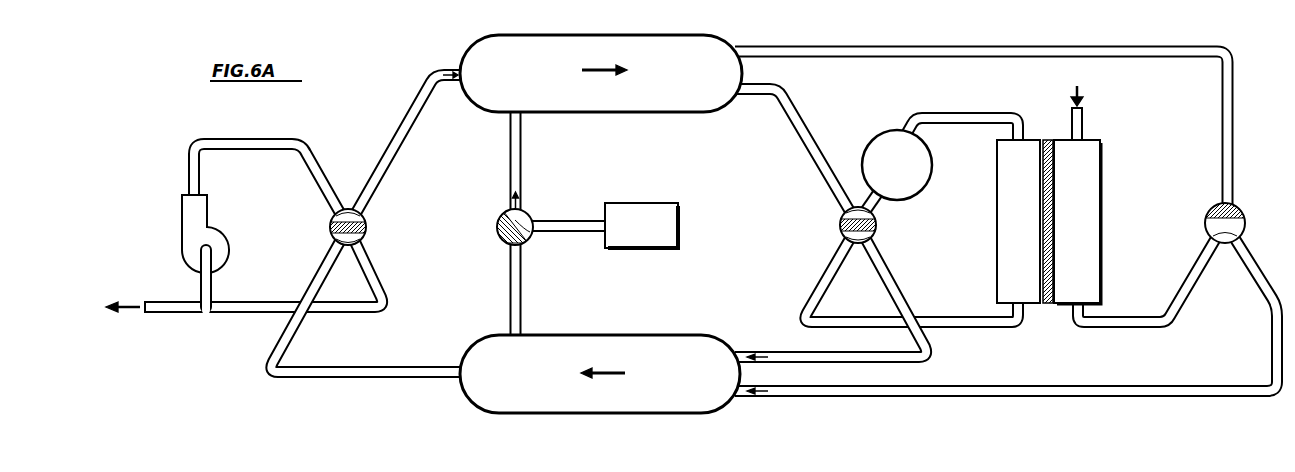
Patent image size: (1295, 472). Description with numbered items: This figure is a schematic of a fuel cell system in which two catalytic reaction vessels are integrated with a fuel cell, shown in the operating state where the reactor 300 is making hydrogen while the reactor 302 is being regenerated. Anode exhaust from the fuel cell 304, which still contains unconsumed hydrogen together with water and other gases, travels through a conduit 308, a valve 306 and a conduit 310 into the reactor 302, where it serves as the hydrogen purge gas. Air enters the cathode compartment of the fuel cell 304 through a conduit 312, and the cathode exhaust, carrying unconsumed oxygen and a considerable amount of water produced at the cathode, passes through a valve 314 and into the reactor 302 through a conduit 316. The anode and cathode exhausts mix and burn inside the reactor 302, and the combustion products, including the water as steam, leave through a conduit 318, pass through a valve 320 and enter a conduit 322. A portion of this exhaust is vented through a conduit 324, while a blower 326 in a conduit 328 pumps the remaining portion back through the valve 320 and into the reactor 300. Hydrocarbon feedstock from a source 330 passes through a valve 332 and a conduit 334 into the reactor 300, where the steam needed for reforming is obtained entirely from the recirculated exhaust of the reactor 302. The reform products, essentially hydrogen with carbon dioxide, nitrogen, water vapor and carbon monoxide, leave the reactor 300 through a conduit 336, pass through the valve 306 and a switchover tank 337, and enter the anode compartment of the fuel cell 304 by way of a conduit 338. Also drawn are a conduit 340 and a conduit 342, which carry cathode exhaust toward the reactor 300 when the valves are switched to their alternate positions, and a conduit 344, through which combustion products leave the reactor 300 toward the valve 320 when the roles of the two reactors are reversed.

The reactor 300 is at (560, 82).
The reactor 302 is at (556, 384).
The fuel cell 304 is at (1103, 209).
The valve 306 is at (880, 227).
The conduit 308 is at (823, 280).
The conduit 310 is at (902, 291).
The conduit 312 is at (1084, 126).
The valve 314 is at (1246, 216).
The conduit 316 is at (915, 393).
The conduit 318 is at (370, 381).
The valve 320 is at (368, 228).
The conduit 322 is at (246, 306).
The conduit 324 is at (177, 303).
The blower 326 is at (213, 234).
The conduit 328 is at (237, 142).
The source 330 is at (636, 203).
The valve 332 is at (497, 230).
The conduit 334 is at (521, 151).
The conduit 336 is at (797, 115).
The switchover tank 337 is at (868, 145).
The conduit 338 is at (1006, 113).
The conduit 340 is at (1192, 283).
The conduit 342 is at (947, 46).
The conduit 344 is at (404, 133).